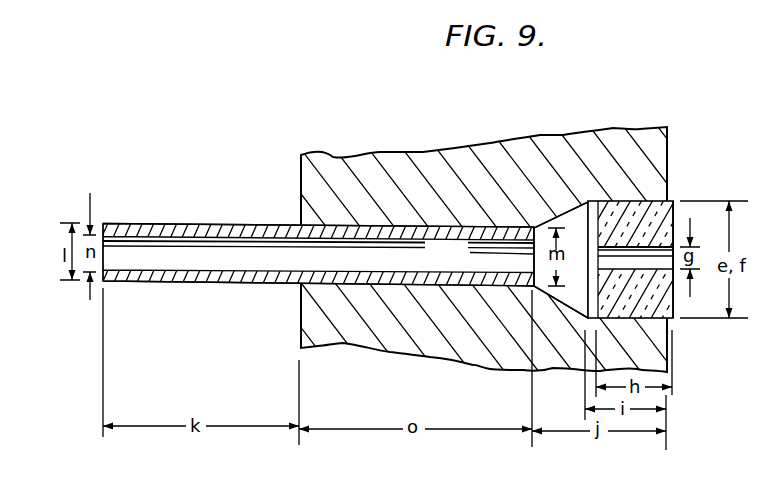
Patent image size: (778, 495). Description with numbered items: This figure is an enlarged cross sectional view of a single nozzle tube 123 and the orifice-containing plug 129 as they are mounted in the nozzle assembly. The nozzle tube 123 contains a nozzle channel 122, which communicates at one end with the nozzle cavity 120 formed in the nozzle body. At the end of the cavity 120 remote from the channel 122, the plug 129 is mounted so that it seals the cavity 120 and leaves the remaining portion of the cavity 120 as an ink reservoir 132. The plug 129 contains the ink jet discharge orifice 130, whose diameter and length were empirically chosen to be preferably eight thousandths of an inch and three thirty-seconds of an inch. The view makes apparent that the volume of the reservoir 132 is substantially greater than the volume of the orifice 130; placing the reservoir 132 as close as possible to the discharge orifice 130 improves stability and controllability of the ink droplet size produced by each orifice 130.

The nozzle cavity 120 is at (618, 318).
The nozzle channel 122 is at (463, 261).
The nozzle tube 123 is at (182, 225).
The plug 129 is at (668, 201).
The ink jet discharge orifice 130 is at (656, 261).
The ink reservoir 132 is at (575, 212).